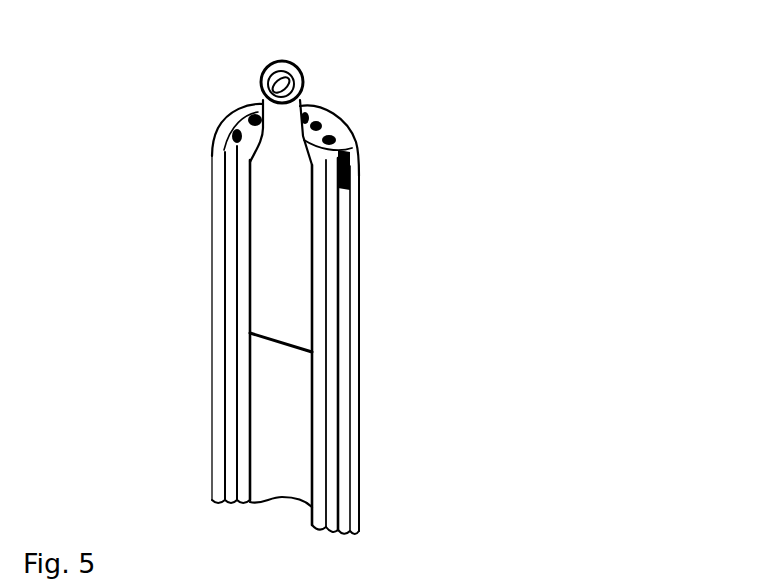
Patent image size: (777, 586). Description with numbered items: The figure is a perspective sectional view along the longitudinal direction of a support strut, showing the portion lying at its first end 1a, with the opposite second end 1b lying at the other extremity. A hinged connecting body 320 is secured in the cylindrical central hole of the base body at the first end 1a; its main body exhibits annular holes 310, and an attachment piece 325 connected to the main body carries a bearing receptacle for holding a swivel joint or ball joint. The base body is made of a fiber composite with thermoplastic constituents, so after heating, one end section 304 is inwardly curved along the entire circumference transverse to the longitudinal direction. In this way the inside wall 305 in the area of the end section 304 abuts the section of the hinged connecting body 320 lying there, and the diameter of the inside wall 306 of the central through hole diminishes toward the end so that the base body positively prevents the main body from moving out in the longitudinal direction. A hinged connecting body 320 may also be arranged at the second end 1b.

The end section 304 is at (368, 151).
The inside wall 305 is at (288, 463).
The inside wall of the central through hole 306 is at (259, 413).
The annular holes 310 is at (330, 136).
The hinged connecting body 320 is at (275, 91).
The attachment piece 325 is at (261, 69).
The first end 1a is at (244, 101).
The second end 1b is at (278, 497).